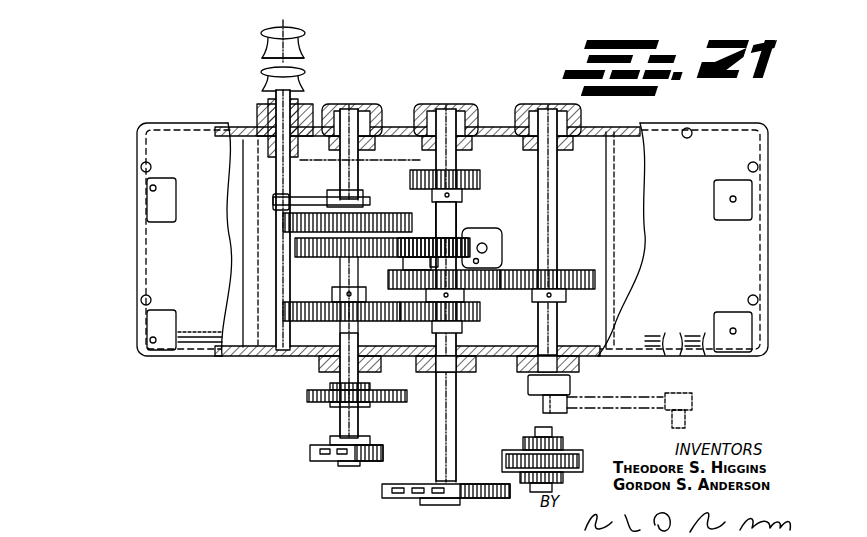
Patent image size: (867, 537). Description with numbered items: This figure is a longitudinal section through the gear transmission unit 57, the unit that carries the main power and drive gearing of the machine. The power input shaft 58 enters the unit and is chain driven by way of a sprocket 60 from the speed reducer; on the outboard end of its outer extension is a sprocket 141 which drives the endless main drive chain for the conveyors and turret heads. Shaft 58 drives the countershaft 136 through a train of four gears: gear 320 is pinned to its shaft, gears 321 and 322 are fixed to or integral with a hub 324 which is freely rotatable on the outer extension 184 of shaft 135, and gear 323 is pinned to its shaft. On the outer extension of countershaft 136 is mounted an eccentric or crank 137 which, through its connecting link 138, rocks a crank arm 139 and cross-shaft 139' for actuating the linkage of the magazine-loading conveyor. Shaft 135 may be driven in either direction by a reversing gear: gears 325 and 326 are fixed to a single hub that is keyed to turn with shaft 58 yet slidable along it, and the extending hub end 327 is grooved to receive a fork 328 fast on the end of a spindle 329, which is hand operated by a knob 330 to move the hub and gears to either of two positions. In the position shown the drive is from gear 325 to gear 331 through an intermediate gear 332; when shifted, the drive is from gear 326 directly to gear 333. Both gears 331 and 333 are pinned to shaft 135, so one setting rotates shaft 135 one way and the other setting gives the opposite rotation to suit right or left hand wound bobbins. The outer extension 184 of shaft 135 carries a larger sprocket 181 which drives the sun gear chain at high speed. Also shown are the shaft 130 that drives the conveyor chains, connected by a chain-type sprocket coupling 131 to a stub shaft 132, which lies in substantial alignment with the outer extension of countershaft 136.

The gear transmission unit 57 is at (135, 270).
The power input shaft 58 is at (344, 376).
The sprocket 60 is at (312, 400).
The shaft 130 is at (532, 490).
The chain-type sprocket coupling 131 is at (575, 452).
The stub shaft 132 is at (533, 434).
The shaft 135 is at (452, 216).
The countershaft 136 is at (549, 196).
The eccentric or crank 137 is at (527, 390).
The connecting link 138 is at (626, 402).
The crank arm 139 is at (703, 394).
The cross-shaft 139' is at (709, 417).
The sprocket 141 is at (318, 460).
The sprocket 181 is at (392, 505).
The outer extension of shaft 184 is at (440, 406).
The gear 320 is at (285, 307).
The gear 321 is at (468, 320).
The gear 322 is at (498, 270).
The gear 323 is at (570, 272).
The hub 324 is at (465, 295).
The gear 325 is at (298, 246).
The gear 326 is at (290, 222).
The extending hub end 327 is at (362, 185).
The fork 328 is at (272, 200).
The spindle 329 is at (300, 104).
The knob 330 is at (268, 70).
The gear 331 is at (470, 240).
The intermediate gear 332 is at (418, 259).
The gear 333 is at (470, 174).